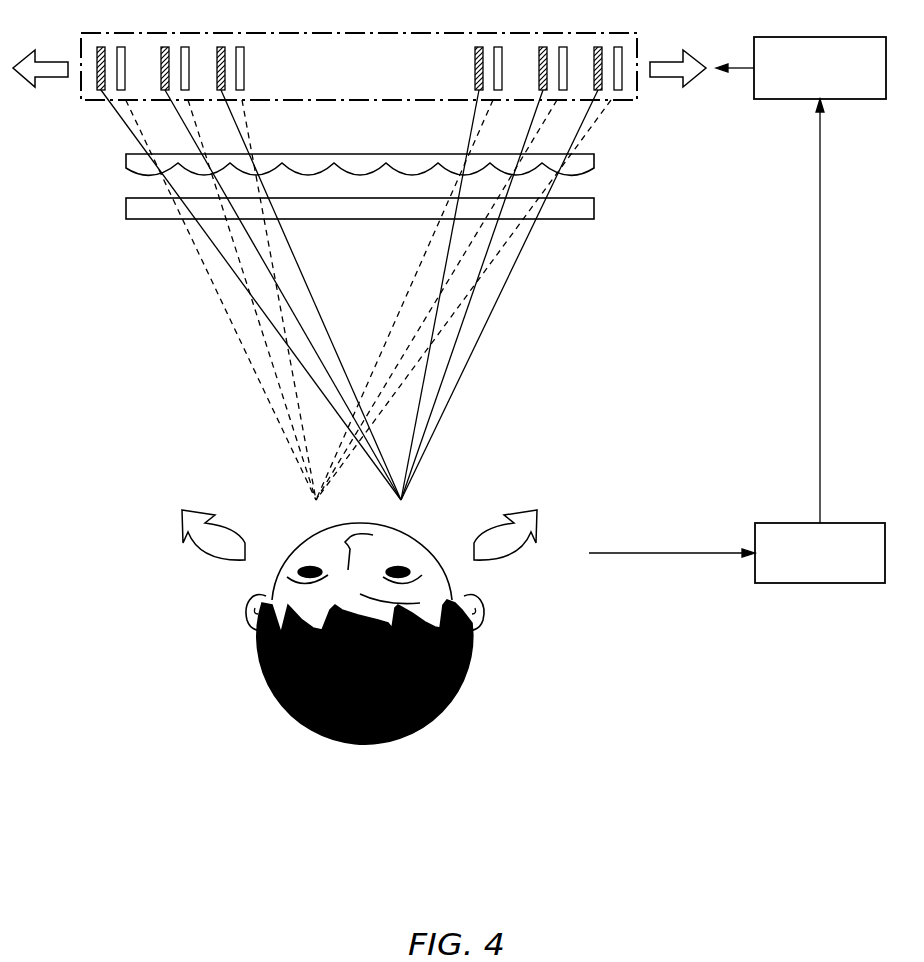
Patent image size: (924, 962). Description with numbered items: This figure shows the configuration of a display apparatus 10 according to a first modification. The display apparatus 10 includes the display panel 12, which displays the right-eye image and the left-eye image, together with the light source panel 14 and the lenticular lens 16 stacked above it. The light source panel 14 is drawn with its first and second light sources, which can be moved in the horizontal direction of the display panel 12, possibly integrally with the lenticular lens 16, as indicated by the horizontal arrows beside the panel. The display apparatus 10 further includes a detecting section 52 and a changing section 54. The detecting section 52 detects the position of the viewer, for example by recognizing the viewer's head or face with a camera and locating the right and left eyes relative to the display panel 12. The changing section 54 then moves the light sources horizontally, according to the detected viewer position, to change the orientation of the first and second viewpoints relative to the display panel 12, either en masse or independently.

The display apparatus 10 is at (470, 840).
The display panel 12 is at (594, 208).
The light source panel 14 is at (363, 33).
The lenticular lens 16 is at (594, 158).
The detecting section 52 is at (822, 583).
The changing section 54 is at (822, 37).